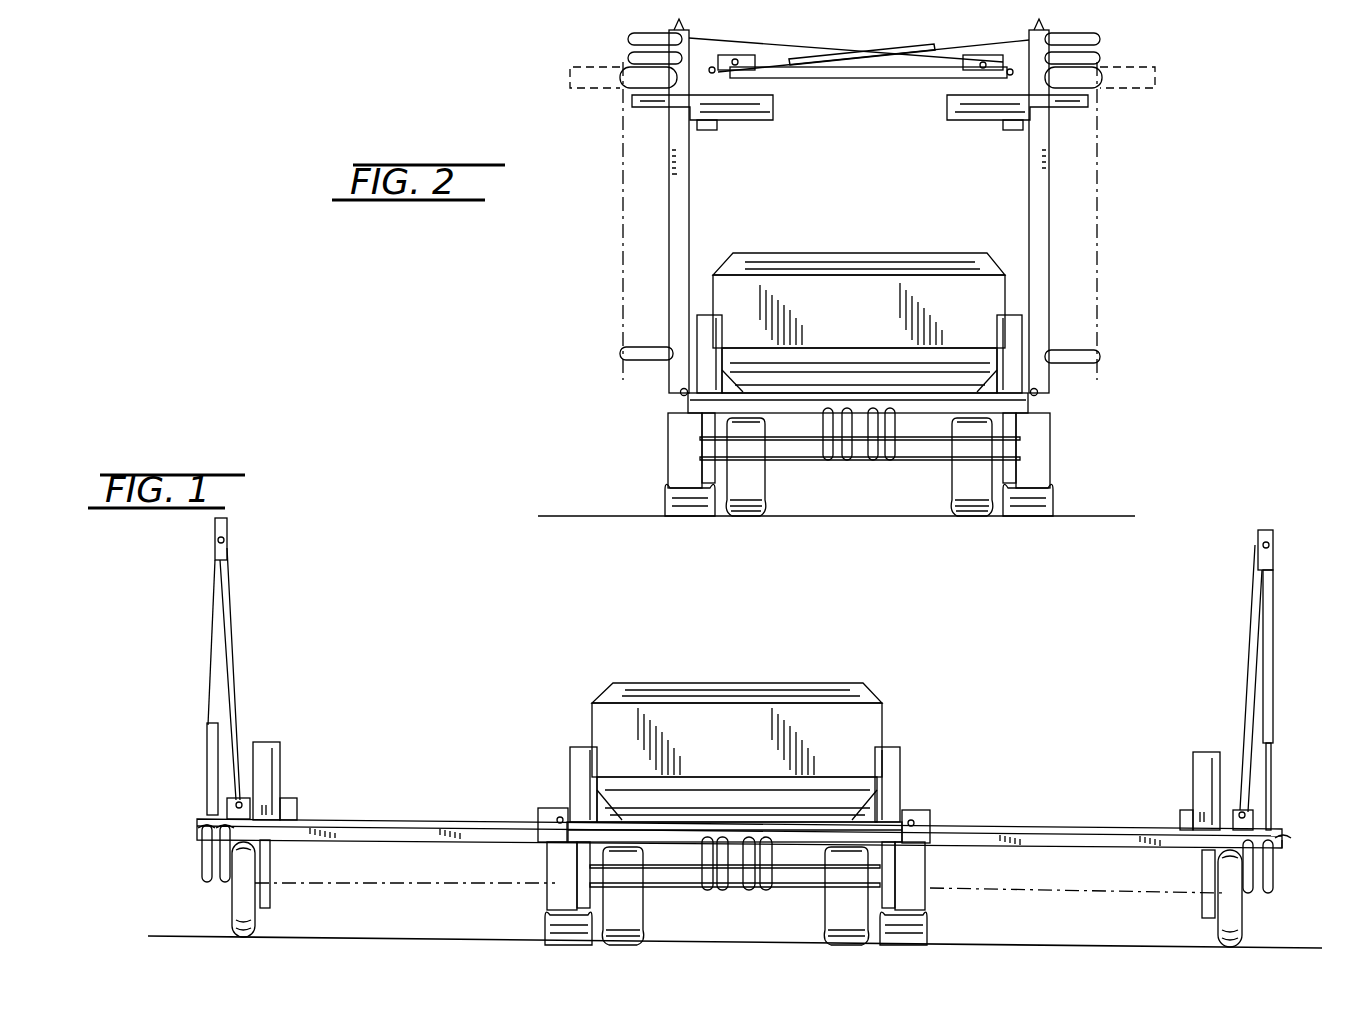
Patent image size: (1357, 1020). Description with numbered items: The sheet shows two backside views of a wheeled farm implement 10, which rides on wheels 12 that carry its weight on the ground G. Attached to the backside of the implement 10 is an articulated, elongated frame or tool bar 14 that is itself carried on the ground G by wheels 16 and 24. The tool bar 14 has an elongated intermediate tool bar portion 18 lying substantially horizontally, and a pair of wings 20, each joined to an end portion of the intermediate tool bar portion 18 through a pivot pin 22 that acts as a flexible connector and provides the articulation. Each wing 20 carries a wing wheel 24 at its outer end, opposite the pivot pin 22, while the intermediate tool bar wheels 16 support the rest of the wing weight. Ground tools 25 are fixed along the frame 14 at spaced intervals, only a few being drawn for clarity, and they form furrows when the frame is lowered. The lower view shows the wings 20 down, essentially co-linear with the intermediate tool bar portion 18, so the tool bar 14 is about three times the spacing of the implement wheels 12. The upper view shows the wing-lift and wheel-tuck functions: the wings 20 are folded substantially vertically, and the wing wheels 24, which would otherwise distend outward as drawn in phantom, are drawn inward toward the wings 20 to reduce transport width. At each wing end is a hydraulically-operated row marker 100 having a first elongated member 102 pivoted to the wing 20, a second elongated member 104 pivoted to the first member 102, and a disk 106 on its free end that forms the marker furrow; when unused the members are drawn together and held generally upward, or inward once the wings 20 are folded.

In FIG. 2, the farm implement 10 is at (870, 298).
In FIG. 1, the farm implement 10 is at (787, 715).
In FIG. 2, the wheels 12 is at (672, 447).
In FIG. 1, the wheels 12 is at (553, 870).
In FIG. 2, the frame or tool bar 14 is at (770, 378).
In FIG. 1, the frame or tool bar 14 is at (708, 805).
In FIG. 2, the intermediate tool bar wheels 16 is at (755, 480).
In FIG. 1, the intermediate tool bar wheels 16 is at (622, 905).
In FIG. 2, the intermediate tool bar portion 18 is at (950, 390).
In FIG. 1, the intermediate tool bar portion 18 is at (835, 822).
In FIG. 2, the wings 20 is at (690, 168).
In FIG. 1, the wings 20 is at (378, 820).
In FIG. 2, the pivot pin 22 is at (680, 392).
In FIG. 1, the pivot pin 22 is at (560, 818).
In FIG. 2, the wing wheel 24 is at (630, 80).
In FIG. 1, the wing wheel 24 is at (240, 900).
In FIG. 2, the ground tools 25 is at (628, 38).
In FIG. 1, the ground tools 25 is at (765, 890).
In FIG. 2, the row marker 100 is at (940, 38).
In FIG. 1, the row marker 100 is at (190, 690).
In FIG. 1, the first elongated member 102 is at (1242, 745).
In FIG. 1, the second elongated member 104 is at (1275, 705).
In FIG. 1, the disk 106 is at (1278, 840).
In FIG. 2, the ground G is at (905, 503).
In FIG. 1, the ground G is at (1006, 933).